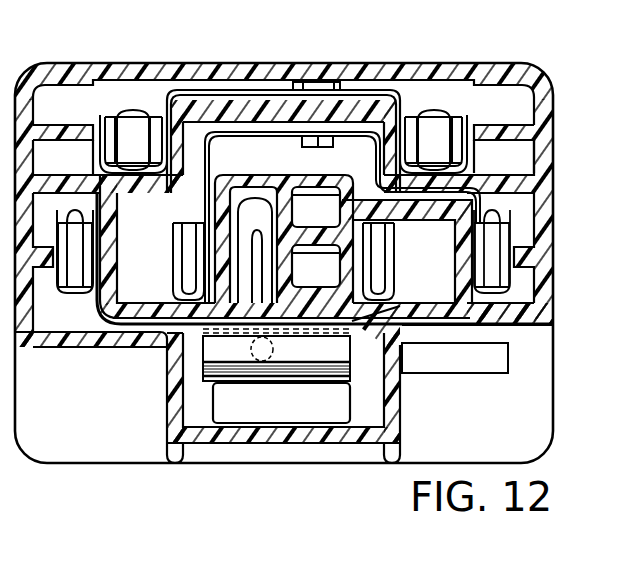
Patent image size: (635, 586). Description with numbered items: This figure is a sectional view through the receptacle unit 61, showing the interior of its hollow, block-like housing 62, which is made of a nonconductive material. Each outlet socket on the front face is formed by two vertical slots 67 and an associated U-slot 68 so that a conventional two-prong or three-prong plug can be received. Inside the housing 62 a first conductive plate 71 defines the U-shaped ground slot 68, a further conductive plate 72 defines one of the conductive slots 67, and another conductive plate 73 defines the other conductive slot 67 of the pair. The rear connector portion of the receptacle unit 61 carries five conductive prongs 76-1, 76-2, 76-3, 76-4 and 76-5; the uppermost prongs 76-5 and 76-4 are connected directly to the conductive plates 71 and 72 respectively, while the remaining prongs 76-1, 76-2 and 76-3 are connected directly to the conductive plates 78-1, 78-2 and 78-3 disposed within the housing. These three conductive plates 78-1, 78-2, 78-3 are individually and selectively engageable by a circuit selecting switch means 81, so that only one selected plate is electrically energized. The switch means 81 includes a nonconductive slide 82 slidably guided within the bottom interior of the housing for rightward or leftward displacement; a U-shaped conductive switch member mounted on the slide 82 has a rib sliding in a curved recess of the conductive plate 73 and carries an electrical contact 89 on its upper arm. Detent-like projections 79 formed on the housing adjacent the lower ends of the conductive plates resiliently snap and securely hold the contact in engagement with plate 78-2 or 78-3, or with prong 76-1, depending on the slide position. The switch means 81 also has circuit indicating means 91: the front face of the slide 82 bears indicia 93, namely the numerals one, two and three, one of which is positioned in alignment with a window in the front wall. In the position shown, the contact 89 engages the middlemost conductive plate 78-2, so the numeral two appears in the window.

The receptacle unit 61 is at (124, 56).
The housing 62 is at (268, 72).
The vertical slots 67 is at (185, 272).
The U-slot 68 is at (140, 125).
The first conductive plate 71 is at (372, 96).
The conductive plate 72 is at (280, 134).
The conductive plate 73 is at (70, 262).
The conductive prong 76-1 is at (402, 343).
The conductive prong 76-2 is at (318, 258).
The conductive prong 76-3 is at (472, 176).
The conductive prong 76-4 is at (404, 97).
The conductive prong 76-5 is at (345, 80).
The conductive plate 78-1 is at (327, 318).
The conductive plate 78-2 is at (272, 268).
The conductive plate 78-3 is at (255, 192).
The detent-like projections 79 is at (318, 343).
The circuit selecting switch means 81 is at (358, 396).
The slide 82 is at (228, 415).
The electrical contact 89 is at (258, 330).
The circuit indicating means 91 is at (262, 410).
The indicia 93 is at (284, 418).